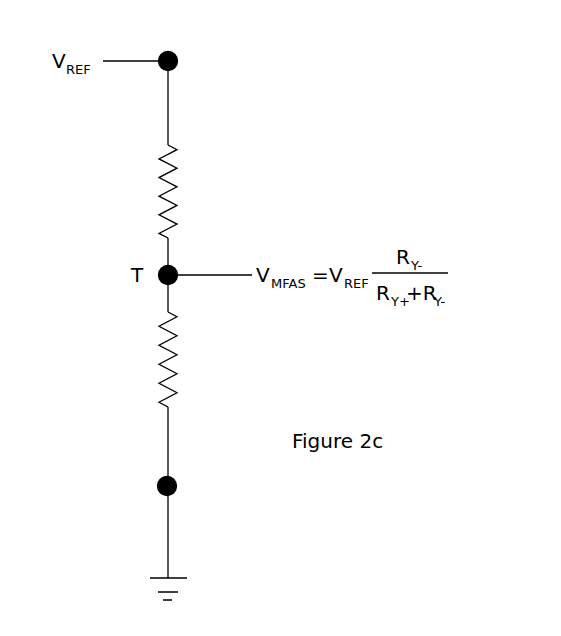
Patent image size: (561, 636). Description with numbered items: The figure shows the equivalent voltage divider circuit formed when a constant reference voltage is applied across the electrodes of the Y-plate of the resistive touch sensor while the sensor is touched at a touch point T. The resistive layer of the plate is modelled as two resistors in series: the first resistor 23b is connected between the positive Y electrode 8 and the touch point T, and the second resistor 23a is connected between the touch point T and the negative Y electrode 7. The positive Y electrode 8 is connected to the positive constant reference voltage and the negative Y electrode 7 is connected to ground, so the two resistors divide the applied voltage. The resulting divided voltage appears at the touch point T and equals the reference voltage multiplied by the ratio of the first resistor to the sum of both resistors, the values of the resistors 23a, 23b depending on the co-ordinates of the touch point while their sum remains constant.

The Y+ electrode 8 is at (163, 53).
The Y− electrode 7 is at (160, 480).
The resistor RY+ 23b is at (162, 180).
The resistor RY− 23a is at (162, 347).